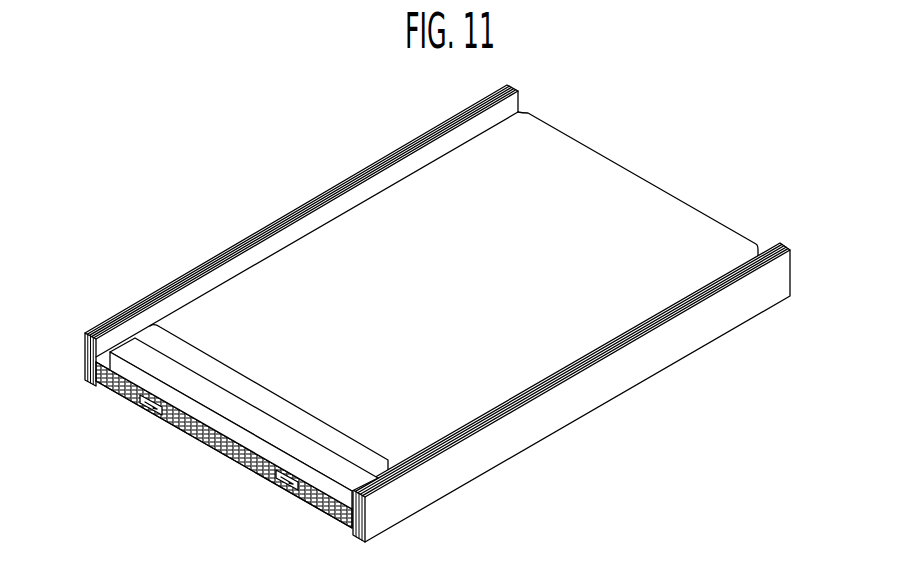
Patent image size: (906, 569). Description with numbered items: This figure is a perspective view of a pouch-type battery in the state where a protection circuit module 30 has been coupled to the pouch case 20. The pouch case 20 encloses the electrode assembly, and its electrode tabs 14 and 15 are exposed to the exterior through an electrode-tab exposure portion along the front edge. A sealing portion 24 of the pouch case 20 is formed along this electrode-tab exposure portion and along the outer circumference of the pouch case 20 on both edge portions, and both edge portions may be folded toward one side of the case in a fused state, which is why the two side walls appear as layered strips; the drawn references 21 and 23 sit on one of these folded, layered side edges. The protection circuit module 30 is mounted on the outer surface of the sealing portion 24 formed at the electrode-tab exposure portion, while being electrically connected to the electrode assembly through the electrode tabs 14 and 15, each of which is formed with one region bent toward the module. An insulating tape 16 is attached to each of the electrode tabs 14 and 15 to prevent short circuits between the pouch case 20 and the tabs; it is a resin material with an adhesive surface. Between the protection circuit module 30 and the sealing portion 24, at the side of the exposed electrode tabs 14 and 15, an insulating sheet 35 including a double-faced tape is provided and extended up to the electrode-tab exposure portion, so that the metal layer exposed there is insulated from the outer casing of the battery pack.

The electrode tab 14 is at (125, 402).
The electrode tab 15 is at (262, 477).
The insulating tape 16 is at (147, 414).
The pouch case 20 is at (340, 262).
The laminate layer 21 is at (189, 272).
The first side wall 23 is at (207, 263).
The sealing portion 24 is at (628, 367).
The protection circuit module 30 is at (142, 352).
The insulating sheet 35 is at (190, 439).